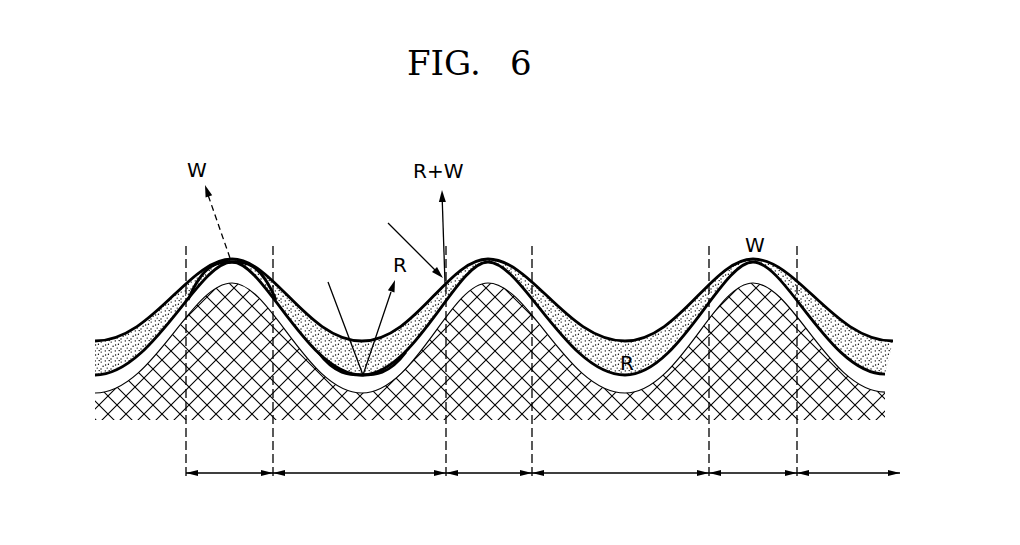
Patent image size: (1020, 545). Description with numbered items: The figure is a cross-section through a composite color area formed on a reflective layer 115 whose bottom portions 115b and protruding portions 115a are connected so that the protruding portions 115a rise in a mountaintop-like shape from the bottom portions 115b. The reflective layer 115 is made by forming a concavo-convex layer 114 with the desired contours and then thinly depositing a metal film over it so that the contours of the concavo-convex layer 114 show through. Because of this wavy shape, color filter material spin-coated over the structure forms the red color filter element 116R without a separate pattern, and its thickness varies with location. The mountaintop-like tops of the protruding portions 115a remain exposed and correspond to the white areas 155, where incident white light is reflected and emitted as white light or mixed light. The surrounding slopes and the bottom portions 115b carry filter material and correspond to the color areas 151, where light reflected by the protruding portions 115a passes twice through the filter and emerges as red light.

The concavo-convex layer 114 is at (163, 407).
The reflective layer 115 is at (110, 381).
The protruding portions 115a is at (235, 272).
The bottom portions 115b is at (325, 382).
The red color filter element 116R is at (118, 347).
The color areas 151 is at (586, 461).
The white areas 155 is at (515, 200).